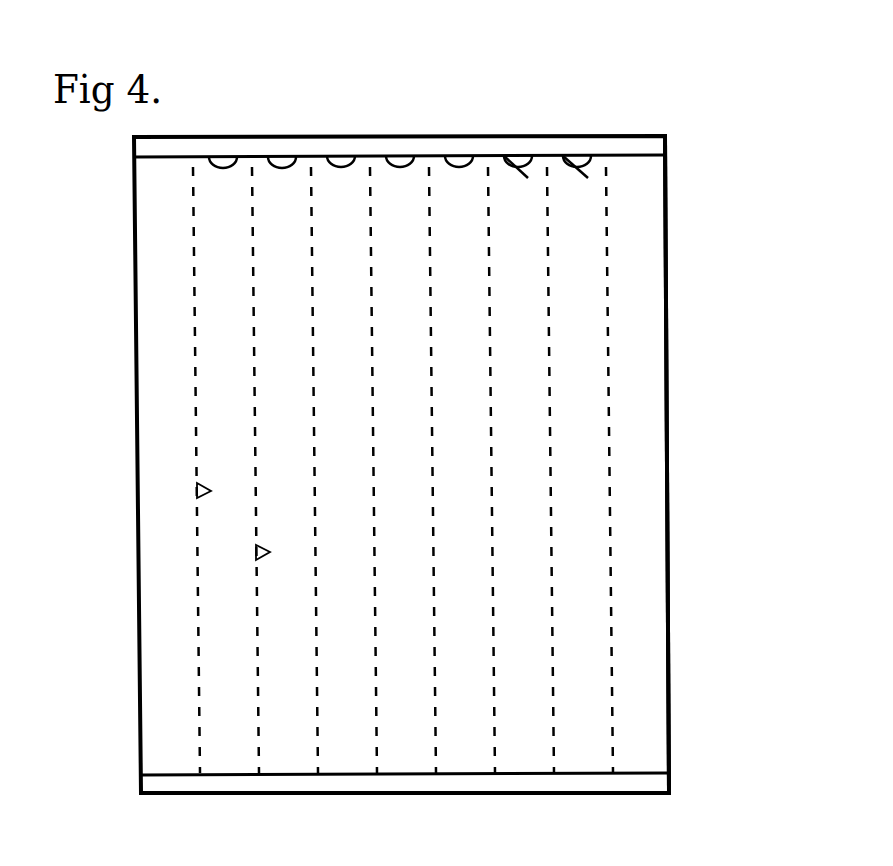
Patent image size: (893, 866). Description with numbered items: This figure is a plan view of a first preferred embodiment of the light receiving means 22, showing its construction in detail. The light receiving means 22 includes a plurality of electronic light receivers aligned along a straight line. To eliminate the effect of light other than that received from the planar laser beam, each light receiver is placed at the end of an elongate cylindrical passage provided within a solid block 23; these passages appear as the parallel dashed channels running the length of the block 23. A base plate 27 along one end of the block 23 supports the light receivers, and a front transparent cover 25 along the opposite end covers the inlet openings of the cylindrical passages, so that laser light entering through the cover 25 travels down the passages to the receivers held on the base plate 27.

The light receiving means 22 is at (694, 391).
The solid block 23 is at (648, 538).
The front transparent cover 25 is at (575, 797).
The base plate 27 is at (430, 148).